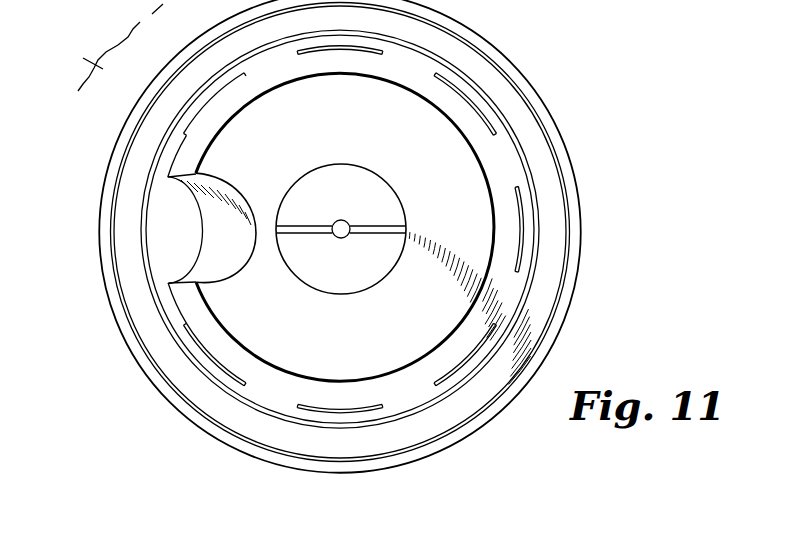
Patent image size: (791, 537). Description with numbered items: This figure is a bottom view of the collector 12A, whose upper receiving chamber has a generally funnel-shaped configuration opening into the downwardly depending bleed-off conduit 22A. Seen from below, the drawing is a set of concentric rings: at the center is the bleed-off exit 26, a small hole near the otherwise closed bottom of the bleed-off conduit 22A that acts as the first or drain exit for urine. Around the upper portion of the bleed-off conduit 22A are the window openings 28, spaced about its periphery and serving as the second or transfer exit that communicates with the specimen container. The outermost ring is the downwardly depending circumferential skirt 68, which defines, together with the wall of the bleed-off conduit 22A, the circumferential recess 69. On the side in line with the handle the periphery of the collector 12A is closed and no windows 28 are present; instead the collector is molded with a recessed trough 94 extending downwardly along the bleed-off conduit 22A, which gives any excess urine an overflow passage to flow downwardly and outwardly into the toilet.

The collector 12A is at (99, 47).
The bleed-off conduit 22A is at (482, 127).
The windows 28 is at (497, 122).
The circumferential recess 69 is at (553, 187).
The circumferential skirt 68 is at (584, 221).
The recessed trough 94 is at (212, 227).
The bleed-off exit 26 is at (345, 240).